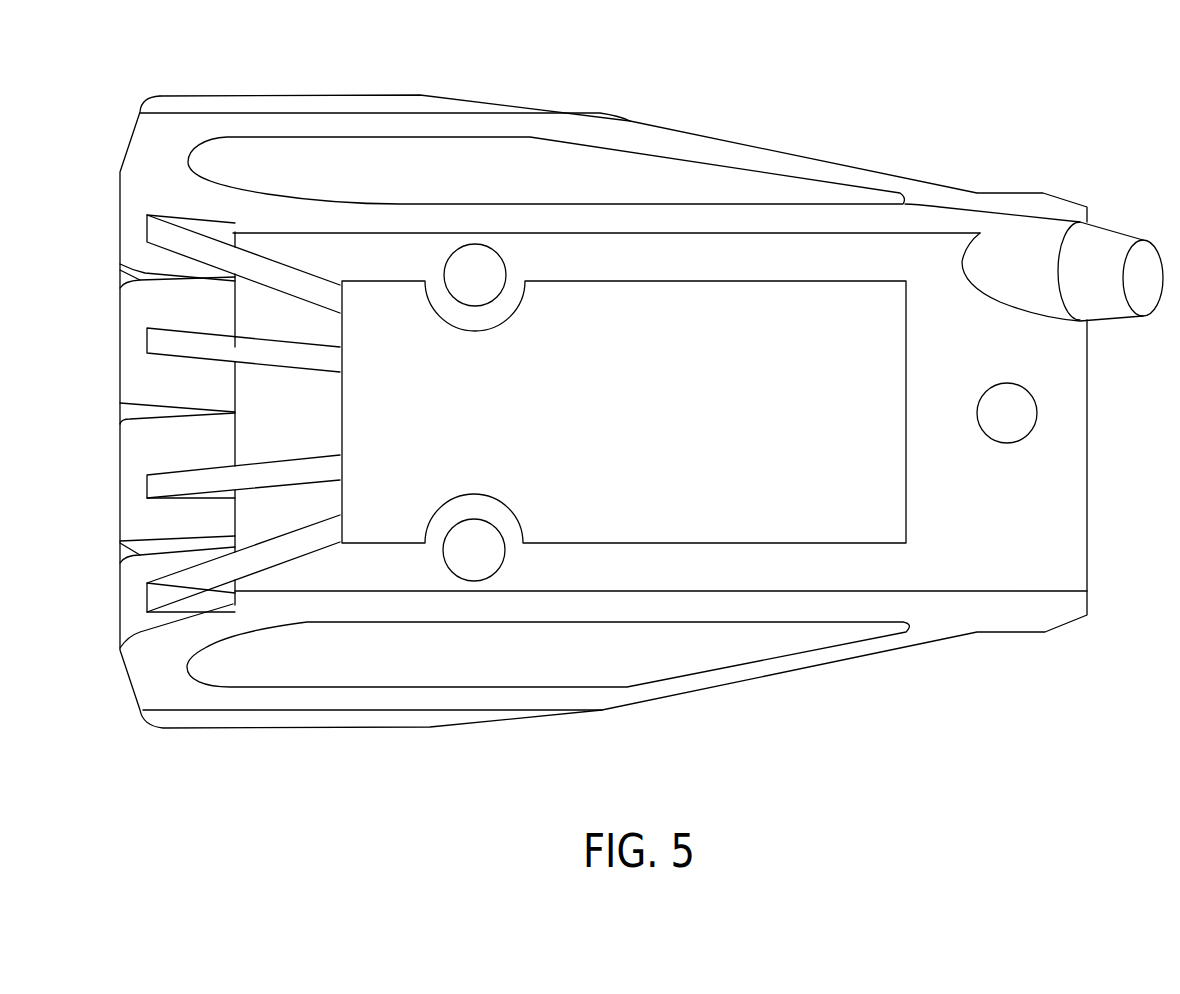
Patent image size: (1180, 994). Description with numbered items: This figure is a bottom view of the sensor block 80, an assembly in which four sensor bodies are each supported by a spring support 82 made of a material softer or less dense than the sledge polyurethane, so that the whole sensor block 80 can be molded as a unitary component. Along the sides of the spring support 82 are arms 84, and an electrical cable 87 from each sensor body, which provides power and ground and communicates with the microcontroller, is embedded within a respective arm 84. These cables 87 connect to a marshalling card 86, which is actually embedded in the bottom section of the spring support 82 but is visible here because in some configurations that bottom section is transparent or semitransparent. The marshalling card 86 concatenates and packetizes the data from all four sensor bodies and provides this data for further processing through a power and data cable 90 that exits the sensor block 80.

The sensor block 80 is at (718, 58).
The spring support 82 is at (847, 160).
The arm 84 is at (120, 220).
The marshalling card 86 is at (833, 513).
The electrical cable 87 is at (283, 278).
The power and data cable 90 is at (1110, 242).